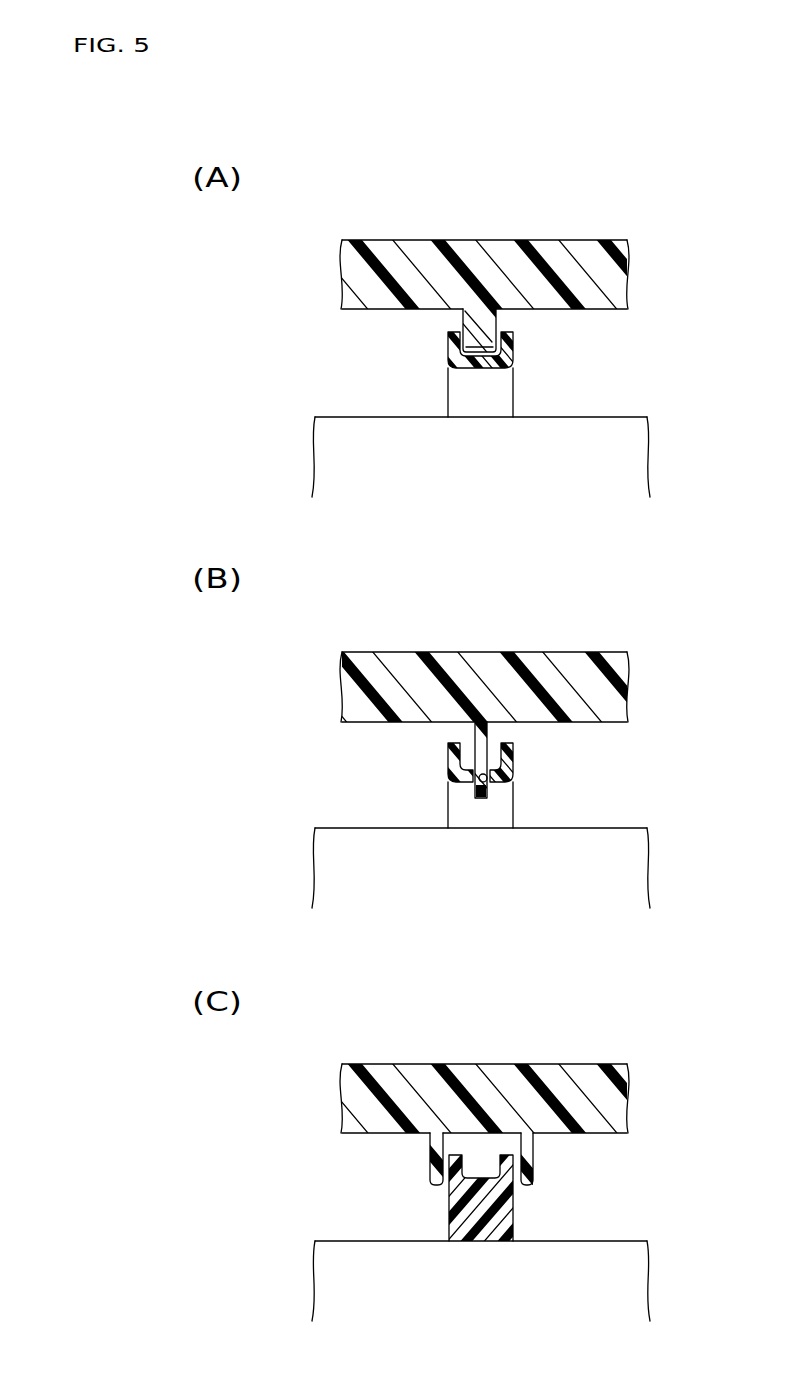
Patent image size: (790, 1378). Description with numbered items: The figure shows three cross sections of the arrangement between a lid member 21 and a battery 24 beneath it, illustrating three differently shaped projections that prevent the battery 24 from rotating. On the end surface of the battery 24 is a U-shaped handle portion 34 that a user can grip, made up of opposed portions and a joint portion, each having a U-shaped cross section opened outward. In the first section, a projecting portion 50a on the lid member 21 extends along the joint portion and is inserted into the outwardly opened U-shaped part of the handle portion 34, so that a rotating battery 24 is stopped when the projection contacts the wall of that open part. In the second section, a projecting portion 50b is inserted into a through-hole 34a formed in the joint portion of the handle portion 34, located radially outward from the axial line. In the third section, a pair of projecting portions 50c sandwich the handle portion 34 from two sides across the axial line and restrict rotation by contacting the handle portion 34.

The lid member 21 is at (385, 238).
The battery 24 is at (612, 417).
The handle portion 34 is at (447, 388).
The through-hole 34a is at (489, 780).
The projecting portion 50a is at (498, 318).
The projecting portion 50b is at (488, 733).
The projecting portion 50c is at (430, 1163).